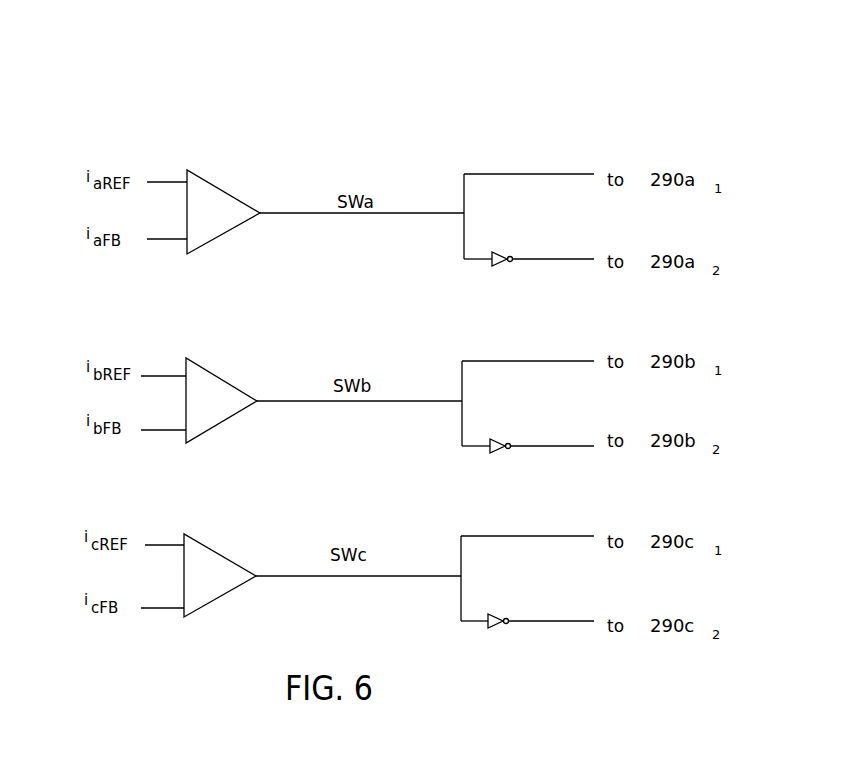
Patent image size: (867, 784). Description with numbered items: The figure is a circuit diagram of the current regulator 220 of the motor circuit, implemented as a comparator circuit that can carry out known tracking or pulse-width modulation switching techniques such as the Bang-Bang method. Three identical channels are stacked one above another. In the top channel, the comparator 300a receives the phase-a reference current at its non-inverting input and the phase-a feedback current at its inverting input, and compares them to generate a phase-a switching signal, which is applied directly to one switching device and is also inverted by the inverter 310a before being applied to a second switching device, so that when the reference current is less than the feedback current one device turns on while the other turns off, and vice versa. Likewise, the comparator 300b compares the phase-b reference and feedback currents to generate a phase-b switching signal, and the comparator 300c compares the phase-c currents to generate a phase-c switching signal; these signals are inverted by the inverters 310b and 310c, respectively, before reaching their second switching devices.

The current regulator 220 is at (519, 87).
The comparator 300a is at (232, 196).
The comparator 300b is at (230, 384).
The comparator 300c is at (229, 557).
The inverter 310a is at (494, 255).
The inverter 310b is at (492, 442).
The inverter 310c is at (490, 617).